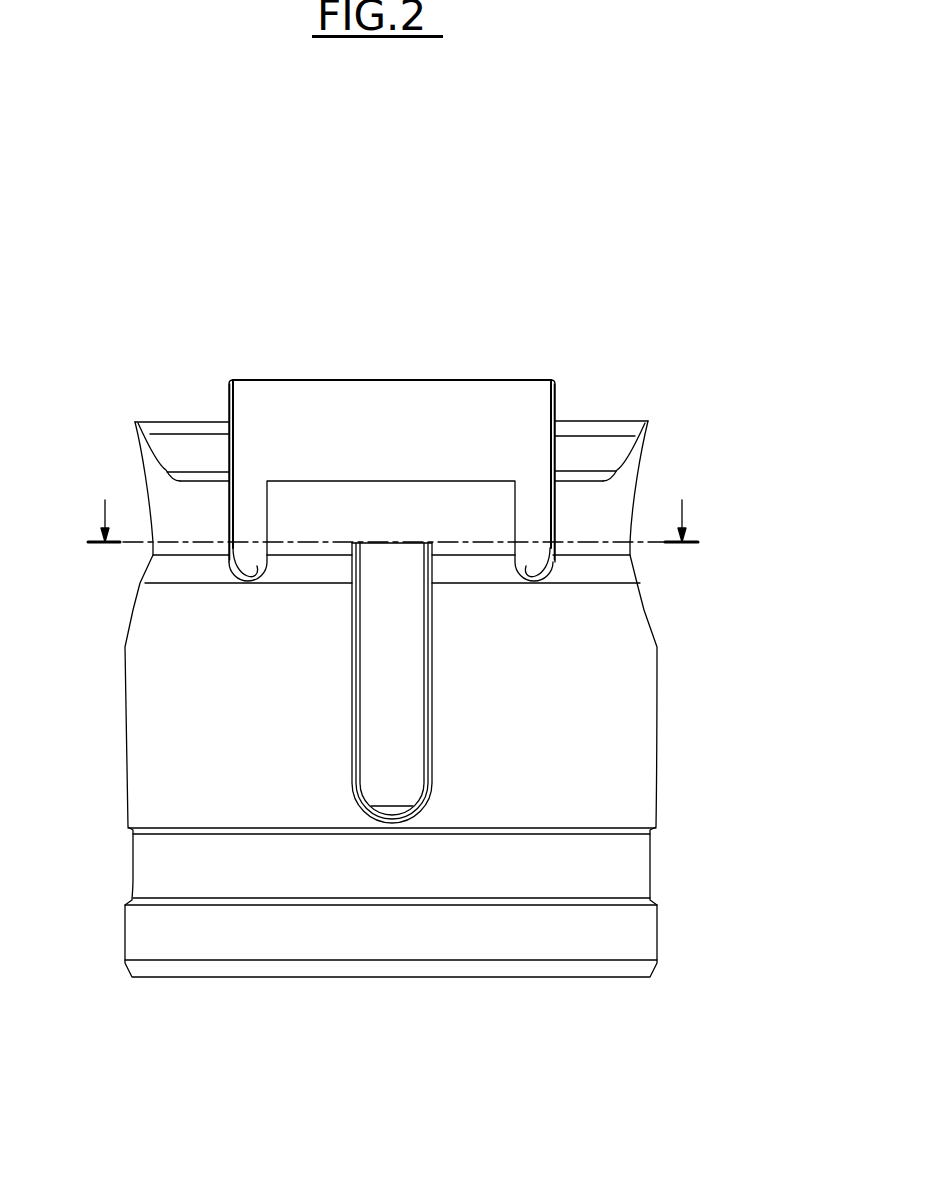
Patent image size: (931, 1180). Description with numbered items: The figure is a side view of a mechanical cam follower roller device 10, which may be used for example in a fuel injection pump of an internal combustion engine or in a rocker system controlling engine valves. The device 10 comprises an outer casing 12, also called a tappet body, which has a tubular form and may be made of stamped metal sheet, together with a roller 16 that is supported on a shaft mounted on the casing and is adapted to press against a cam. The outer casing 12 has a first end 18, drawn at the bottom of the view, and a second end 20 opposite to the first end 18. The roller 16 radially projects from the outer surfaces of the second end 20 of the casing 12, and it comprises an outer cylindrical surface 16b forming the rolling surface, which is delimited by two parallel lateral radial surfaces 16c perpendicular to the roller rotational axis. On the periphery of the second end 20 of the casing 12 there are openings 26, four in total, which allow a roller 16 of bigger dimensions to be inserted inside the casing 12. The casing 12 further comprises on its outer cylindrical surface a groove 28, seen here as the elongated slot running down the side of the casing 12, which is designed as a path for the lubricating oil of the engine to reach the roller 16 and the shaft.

The mechanical cam follower roller device 10 is at (612, 306).
The outer casing 12 is at (750, 766).
The roller 16 is at (426, 411).
The outer cylindrical surface 16b is at (336, 380).
The lateral radial surfaces 16c is at (229, 403).
The first end 18 is at (133, 937).
The second end 20 is at (182, 506).
The openings 26 is at (245, 582).
The groove 28 is at (422, 718).